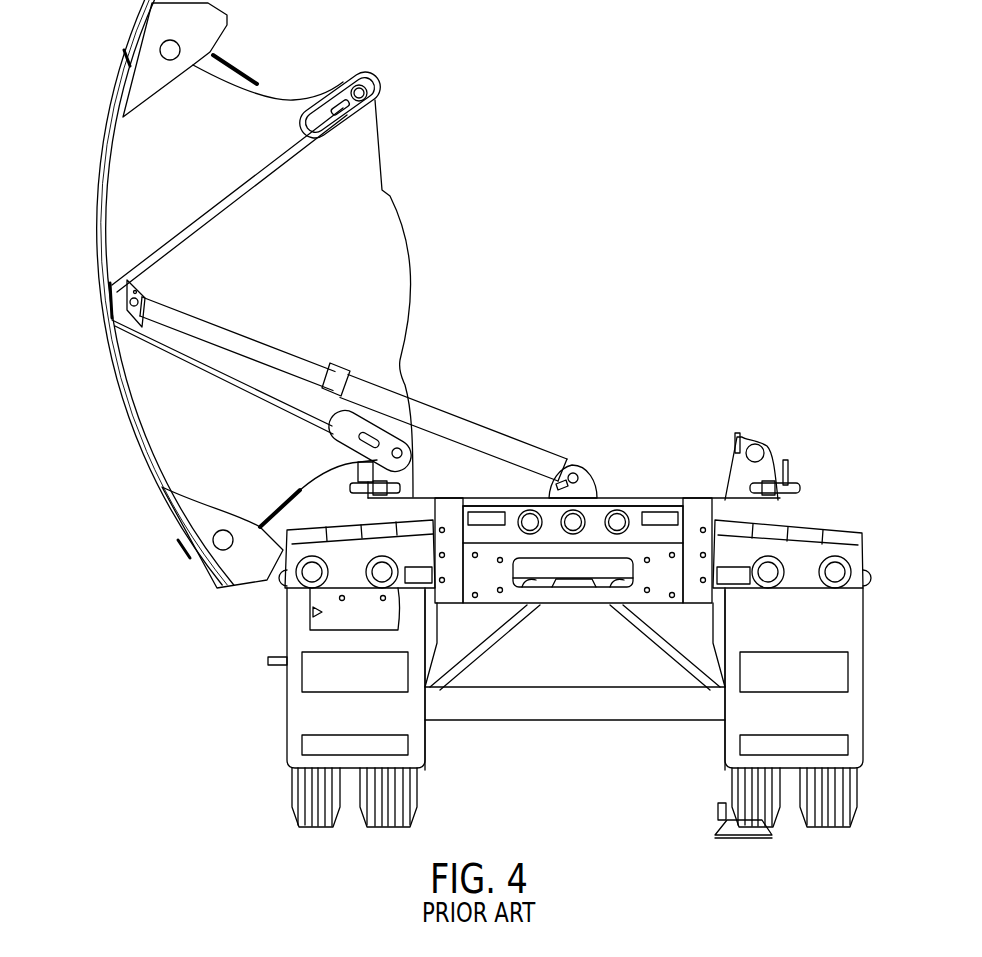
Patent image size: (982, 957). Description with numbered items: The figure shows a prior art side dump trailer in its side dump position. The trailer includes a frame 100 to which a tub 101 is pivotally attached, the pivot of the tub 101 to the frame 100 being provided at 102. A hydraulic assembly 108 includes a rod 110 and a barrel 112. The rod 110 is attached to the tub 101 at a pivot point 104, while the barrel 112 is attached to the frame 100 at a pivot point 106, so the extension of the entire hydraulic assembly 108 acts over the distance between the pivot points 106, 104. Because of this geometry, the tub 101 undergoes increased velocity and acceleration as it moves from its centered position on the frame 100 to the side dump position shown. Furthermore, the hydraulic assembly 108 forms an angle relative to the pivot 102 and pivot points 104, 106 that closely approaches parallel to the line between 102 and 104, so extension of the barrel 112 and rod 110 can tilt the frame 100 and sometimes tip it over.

The frame 100 is at (630, 498).
The tub 101 is at (92, 229).
The pivot 102 is at (409, 458).
The pivot point 104 is at (146, 298).
The pivot point 106 is at (578, 467).
The hydraulic assembly 108 is at (290, 338).
The rod 110 is at (221, 328).
The barrel 112 is at (442, 409).